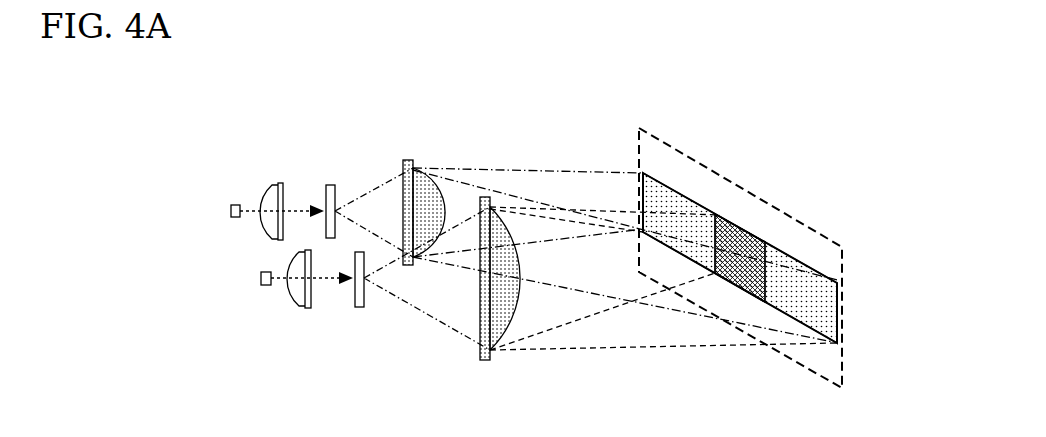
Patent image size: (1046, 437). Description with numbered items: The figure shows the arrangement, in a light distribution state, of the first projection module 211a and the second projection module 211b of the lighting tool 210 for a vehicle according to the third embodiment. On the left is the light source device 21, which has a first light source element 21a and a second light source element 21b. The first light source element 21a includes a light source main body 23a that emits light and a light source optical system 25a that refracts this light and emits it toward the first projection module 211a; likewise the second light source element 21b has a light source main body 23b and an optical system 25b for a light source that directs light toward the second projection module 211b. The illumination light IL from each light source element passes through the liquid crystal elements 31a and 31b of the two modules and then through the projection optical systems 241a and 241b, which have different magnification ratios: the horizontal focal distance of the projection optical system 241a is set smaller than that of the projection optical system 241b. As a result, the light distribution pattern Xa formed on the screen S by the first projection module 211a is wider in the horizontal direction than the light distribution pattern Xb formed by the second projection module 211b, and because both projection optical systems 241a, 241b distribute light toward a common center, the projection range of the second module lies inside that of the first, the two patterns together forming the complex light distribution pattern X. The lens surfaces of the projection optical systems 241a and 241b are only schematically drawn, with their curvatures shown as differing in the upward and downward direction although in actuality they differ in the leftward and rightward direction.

The light source device 21 is at (115, 143).
The first light source element 21a is at (178, 123).
The second light source element 21b is at (178, 240).
The light source main body 23a is at (236, 205).
The light source main body 23b is at (265, 286).
The light source optical system 25a is at (262, 184).
The optical system for a light source 25b is at (290, 262).
The liquid crystal element 31a is at (329, 176).
The liquid crystal element 31b is at (358, 316).
The illumination light IL is at (361, 195).
The lighting tool for a vehicle 210 is at (432, 96).
The first projection module 211a is at (452, 112).
The second projection module 211b is at (533, 379).
The projection optical system 241a is at (422, 155).
The projection optical system 241b is at (494, 366).
The screen S is at (843, 277).
The complex light distribution pattern X is at (877, 113).
The light distribution pattern Xa is at (687, 193).
The light distribution pattern Xb is at (743, 230).